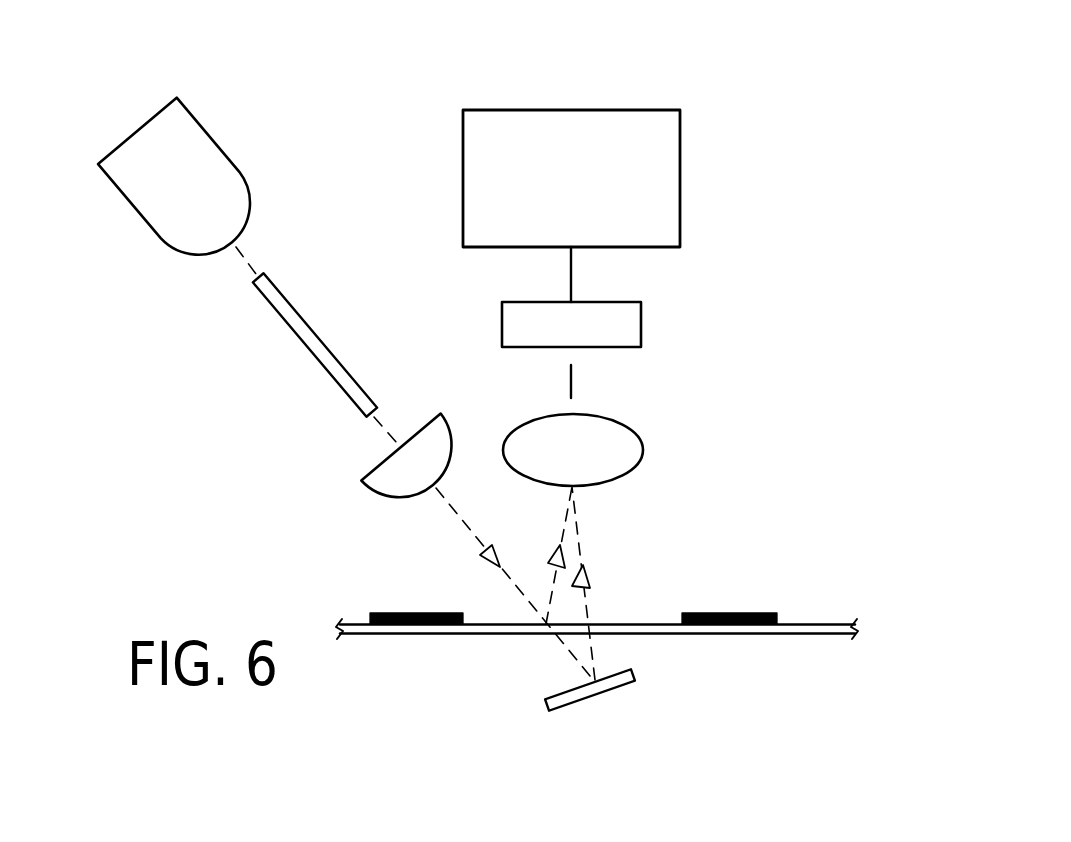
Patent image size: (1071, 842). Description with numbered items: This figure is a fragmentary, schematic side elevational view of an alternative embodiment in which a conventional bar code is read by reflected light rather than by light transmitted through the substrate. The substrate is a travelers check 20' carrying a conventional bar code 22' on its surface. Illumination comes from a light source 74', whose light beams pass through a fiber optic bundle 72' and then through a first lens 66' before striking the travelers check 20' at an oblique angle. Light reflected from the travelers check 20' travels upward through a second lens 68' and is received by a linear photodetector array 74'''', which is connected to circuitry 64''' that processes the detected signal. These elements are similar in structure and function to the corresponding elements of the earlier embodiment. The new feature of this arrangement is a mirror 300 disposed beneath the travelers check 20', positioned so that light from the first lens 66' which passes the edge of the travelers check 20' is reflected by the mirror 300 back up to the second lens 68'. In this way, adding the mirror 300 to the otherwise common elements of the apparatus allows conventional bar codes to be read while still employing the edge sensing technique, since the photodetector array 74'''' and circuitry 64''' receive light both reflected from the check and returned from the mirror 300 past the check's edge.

The light source 74' is at (156, 190).
The fiber optic bundle 72' is at (283, 344).
The first lens 66' is at (371, 486).
The circuitry 64''' is at (629, 177).
The linear photodetector array 74'''' is at (632, 303).
The second lens 68' is at (619, 437).
The travelers check 20' is at (615, 596).
The conventional bar code 22' is at (592, 585).
The mirror 300 is at (610, 687).